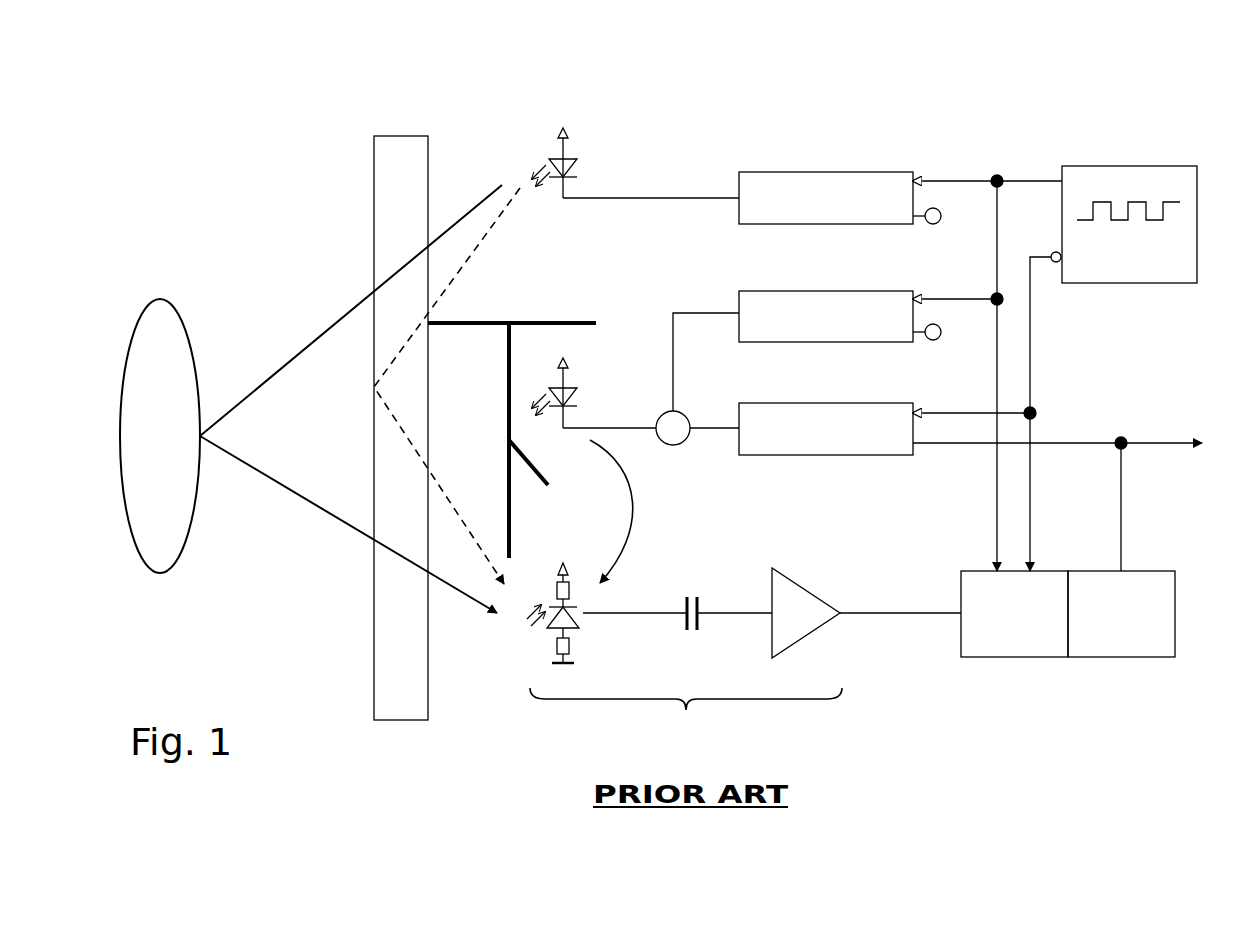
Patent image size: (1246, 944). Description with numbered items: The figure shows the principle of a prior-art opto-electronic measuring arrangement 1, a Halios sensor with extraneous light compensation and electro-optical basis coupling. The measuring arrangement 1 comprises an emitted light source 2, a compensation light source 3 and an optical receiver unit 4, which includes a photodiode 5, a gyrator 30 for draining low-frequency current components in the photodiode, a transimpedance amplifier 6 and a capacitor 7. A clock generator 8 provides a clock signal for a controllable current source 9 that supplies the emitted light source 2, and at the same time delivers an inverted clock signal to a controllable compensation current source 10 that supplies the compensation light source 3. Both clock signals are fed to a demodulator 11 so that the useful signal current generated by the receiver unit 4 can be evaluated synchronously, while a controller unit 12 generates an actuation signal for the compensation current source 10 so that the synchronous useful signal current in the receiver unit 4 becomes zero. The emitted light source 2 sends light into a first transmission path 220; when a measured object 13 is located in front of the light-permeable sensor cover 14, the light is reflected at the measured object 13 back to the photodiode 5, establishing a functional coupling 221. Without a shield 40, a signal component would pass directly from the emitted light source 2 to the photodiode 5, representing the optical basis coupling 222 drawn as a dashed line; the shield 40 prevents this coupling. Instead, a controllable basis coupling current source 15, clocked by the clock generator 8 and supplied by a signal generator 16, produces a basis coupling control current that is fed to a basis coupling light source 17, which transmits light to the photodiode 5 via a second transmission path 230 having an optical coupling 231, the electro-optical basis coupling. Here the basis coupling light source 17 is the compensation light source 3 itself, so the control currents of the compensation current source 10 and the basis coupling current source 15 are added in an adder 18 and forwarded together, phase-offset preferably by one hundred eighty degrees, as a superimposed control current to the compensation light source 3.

The opto-electronic measuring arrangement 1 is at (776, 69).
The emitted light source 2 is at (635, 160).
The compensation light source 3 is at (561, 371).
The optical receiver unit 4 is at (686, 713).
The photodiode 5 is at (607, 611).
The transimpedance amplifier 6 is at (866, 613).
The capacitor 7 is at (729, 597).
The clock generator 8 is at (1094, 368).
The controllable current source 9 is at (868, 181).
The controllable compensation current source 10 is at (979, 429).
The demodulator 11 is at (1014, 614).
The controller unit 12 is at (1121, 614).
The measured object 13 is at (160, 436).
The sensor cover 14 is at (401, 428).
The controllable basis coupling current source 15 is at (868, 316).
The signal generator 16 is at (947, 347).
The basis coupling light source 17 is at (594, 408).
The adder 18 is at (697, 379).
The gyrator 30 is at (570, 587).
The shield 40 is at (513, 493).
The first transmission path 220 is at (323, 436).
The functional coupling 221 is at (284, 367).
The optical basis coupling 222 is at (413, 444).
The second transmission path 230 is at (597, 450).
The electro-optical basis coupling 231 is at (622, 560).